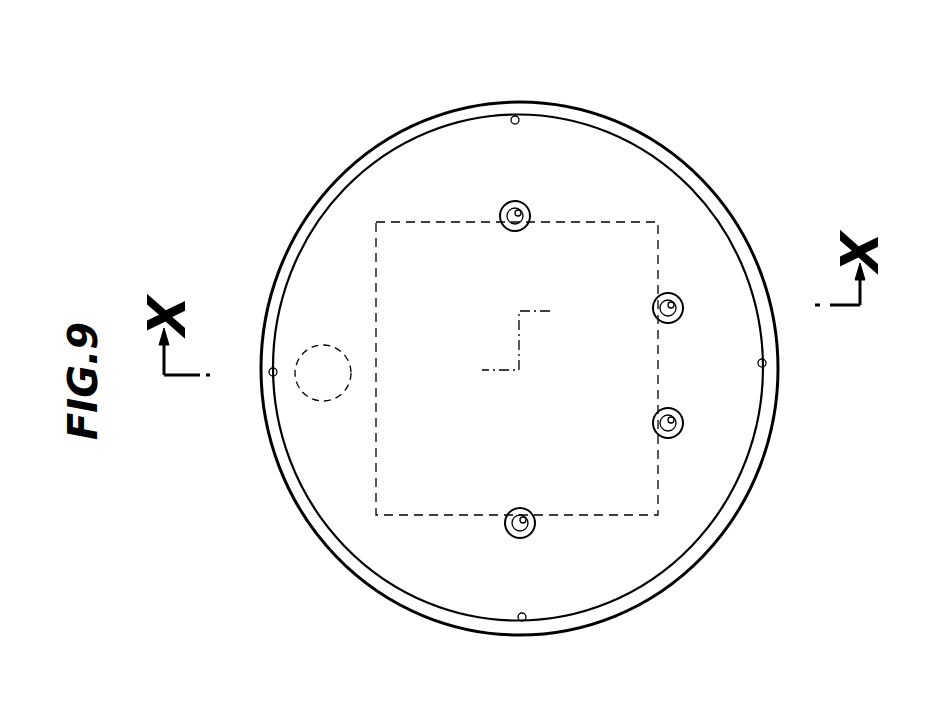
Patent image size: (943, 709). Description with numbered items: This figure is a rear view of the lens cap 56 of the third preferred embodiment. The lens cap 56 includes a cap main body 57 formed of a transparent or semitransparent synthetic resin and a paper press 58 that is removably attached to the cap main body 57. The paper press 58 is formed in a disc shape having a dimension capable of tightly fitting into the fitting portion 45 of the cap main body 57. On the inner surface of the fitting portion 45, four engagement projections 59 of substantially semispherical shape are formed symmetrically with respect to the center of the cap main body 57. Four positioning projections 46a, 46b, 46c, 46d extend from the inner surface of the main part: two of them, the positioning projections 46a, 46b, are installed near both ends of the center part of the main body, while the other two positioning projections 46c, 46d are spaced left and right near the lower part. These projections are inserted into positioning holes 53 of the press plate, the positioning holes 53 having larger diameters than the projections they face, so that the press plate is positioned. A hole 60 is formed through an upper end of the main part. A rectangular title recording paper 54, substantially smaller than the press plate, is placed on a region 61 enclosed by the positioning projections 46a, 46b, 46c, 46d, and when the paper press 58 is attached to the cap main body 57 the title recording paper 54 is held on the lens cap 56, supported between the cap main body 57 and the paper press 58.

The fitting portion 45 is at (620, 132).
The positioning projection 46a is at (511, 511).
The positioning projection 46b is at (506, 228).
The positioning projection 46c is at (654, 420).
The positioning projection 46d is at (655, 302).
The positioning hole 53 is at (508, 208).
The title recording paper 54 is at (376, 495).
The lens cap 56 is at (300, 131).
The cap main body 57 is at (402, 132).
The paper press 58 is at (460, 157).
The engagement projection 59 is at (517, 124).
The hole 60 is at (334, 362).
The region 61 is at (660, 492).